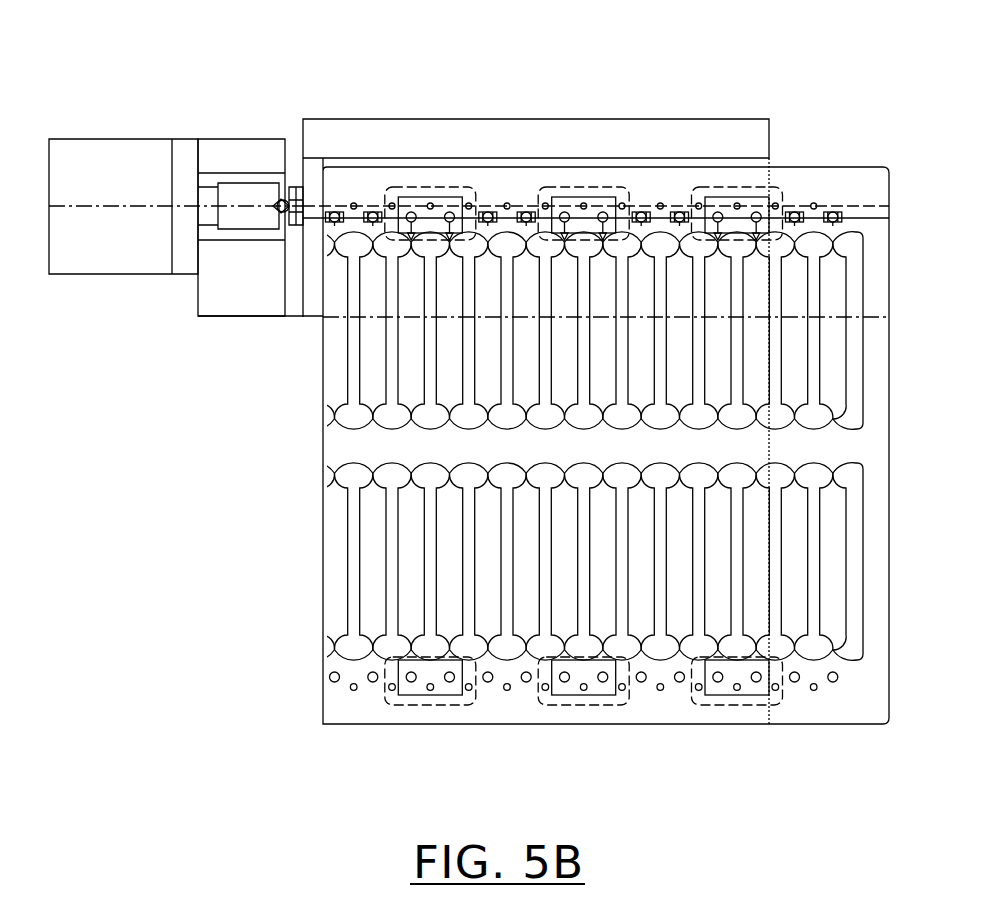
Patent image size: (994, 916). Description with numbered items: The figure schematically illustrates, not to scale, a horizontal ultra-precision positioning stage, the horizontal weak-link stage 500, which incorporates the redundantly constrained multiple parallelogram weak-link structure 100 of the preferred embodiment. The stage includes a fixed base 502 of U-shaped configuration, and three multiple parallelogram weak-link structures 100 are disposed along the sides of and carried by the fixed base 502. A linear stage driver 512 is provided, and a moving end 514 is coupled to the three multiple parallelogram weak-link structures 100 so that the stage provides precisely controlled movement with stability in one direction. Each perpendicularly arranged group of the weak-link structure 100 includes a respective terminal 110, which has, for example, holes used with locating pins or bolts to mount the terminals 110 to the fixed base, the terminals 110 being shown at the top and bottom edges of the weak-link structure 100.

The horizontal weak-link stage 500 is at (537, 32).
The linear stage driver 512 is at (146, 136).
The fixed base 502 is at (265, 290).
The moving end 514 is at (535, 142).
The multiple parallelogram weak-link structure 100 is at (344, 456).
The terminal 110 is at (407, 202).